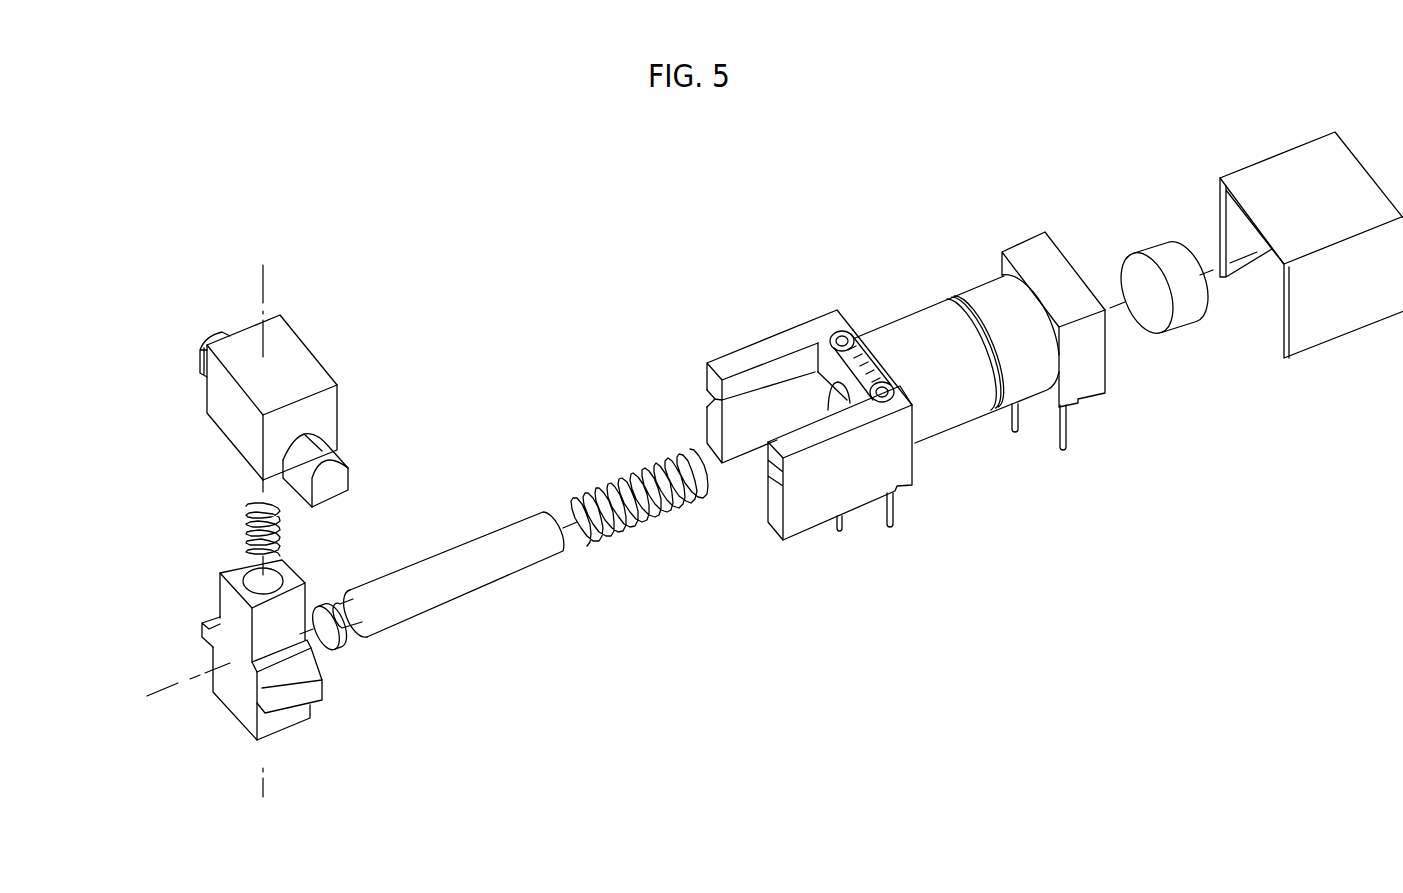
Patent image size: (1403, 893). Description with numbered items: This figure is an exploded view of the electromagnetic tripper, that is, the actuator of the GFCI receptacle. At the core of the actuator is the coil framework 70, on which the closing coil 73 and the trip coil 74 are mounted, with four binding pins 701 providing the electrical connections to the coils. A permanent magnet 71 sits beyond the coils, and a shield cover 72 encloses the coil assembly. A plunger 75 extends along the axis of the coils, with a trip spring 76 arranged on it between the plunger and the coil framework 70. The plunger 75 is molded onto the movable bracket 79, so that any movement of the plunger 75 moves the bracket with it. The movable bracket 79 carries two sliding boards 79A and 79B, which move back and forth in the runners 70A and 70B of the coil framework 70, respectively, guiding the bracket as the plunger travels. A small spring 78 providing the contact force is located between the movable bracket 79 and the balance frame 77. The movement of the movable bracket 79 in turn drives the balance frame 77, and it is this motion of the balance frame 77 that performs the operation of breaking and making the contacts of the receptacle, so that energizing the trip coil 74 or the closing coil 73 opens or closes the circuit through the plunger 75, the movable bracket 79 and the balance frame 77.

The coil framework 70 is at (854, 443).
The runner 70A is at (773, 497).
The runner 70B is at (708, 417).
The binding pins 701 is at (893, 513).
The permanent magnet 71 is at (1163, 253).
The shield cover 72 is at (1297, 342).
The closing coil 73 is at (987, 292).
The trip coil 74 is at (892, 328).
The plunger 75 is at (412, 602).
The trip spring 76 is at (637, 525).
The balance frame 77 is at (332, 425).
The small spring 78 is at (282, 537).
The movable bracket 79 is at (267, 650).
The sliding board 79A is at (300, 685).
The sliding board 79B is at (205, 620).